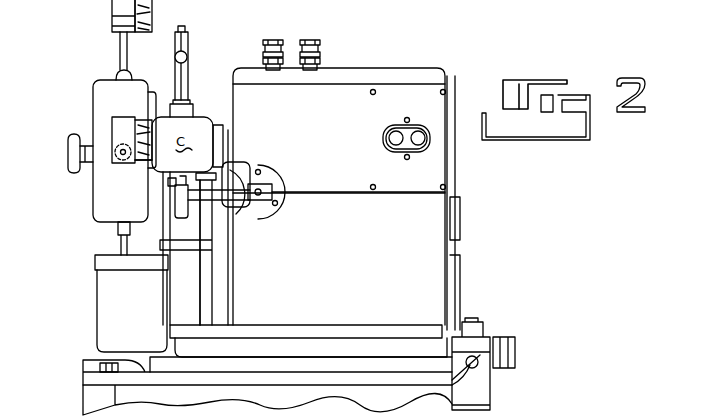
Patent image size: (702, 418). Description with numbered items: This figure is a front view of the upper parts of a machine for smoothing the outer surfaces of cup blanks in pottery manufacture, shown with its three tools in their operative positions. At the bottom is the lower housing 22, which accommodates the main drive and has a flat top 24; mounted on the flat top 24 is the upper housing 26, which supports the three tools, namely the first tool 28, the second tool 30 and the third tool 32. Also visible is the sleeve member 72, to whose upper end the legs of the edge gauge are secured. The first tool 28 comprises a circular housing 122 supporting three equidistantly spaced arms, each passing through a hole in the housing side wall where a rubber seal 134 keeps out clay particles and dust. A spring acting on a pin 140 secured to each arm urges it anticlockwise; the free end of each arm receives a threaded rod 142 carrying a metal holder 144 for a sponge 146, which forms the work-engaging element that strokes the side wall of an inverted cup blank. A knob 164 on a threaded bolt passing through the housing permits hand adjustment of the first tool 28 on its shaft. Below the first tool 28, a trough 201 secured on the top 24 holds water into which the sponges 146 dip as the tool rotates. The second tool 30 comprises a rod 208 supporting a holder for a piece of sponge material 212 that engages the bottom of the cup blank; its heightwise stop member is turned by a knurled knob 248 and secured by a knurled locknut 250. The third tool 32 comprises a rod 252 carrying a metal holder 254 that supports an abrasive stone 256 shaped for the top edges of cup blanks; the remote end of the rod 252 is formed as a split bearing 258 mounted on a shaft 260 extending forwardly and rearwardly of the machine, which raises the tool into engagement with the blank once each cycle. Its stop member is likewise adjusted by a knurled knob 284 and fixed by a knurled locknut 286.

The lower housing 22 is at (92, 398).
The flat top 24 is at (366, 332).
The upper housing 26 is at (408, 240).
The first tool 28 is at (77, 79).
The second tool 30 is at (211, 62).
The third tool 32 is at (209, 268).
The sleeve member 72 is at (194, 284).
The circular housing 122 is at (93, 194).
The rubber seal 134 is at (116, 72).
The pin 140 is at (132, 16).
The rod 142 is at (124, 50).
The metal holder 144 is at (124, 117).
The sponge 146 is at (145, 166).
The knob 164 is at (72, 136).
The trough 201 is at (140, 327).
The rod 208 is at (184, 36).
The sponge material 212 is at (192, 107).
The knurled knob 248 is at (263, 45).
The knurled locknut 250 is at (263, 63).
The rod 252 is at (238, 208).
The metal holder 254 is at (185, 218).
The abrasive stone 256 is at (178, 184).
The split bearing 258 is at (272, 200).
The shaft 260 is at (262, 191).
The knurled knob 284 is at (320, 45).
The knurled locknut 286 is at (320, 63).